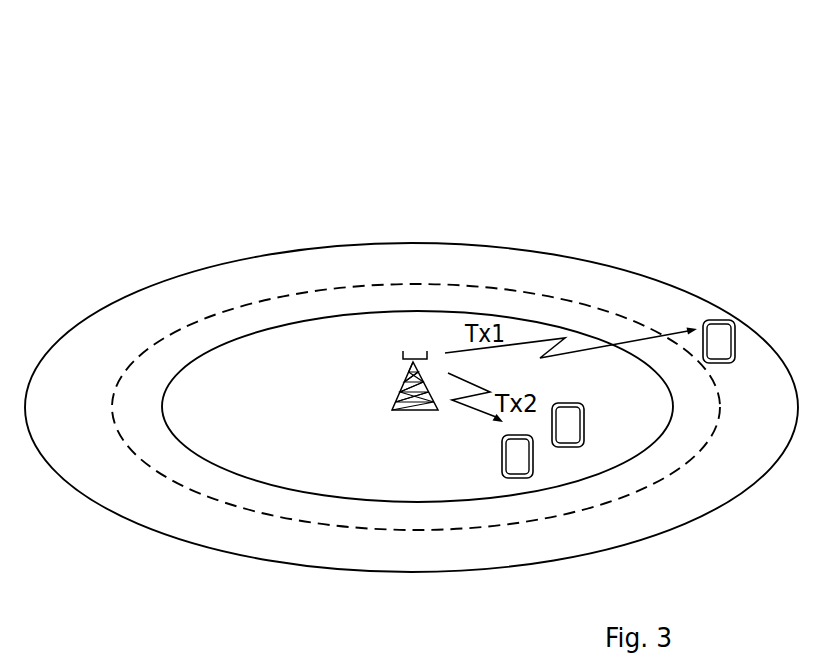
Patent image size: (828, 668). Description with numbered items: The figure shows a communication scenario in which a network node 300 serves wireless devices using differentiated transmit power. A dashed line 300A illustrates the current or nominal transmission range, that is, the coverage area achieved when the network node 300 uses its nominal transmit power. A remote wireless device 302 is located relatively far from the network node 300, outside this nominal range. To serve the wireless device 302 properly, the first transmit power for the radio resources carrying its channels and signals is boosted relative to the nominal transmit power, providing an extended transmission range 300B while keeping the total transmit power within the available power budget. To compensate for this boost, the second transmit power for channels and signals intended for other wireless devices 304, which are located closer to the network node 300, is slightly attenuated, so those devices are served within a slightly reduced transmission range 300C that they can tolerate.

The network node 300 is at (398, 386).
The dashed line (nominal transmission range) 300A is at (475, 275).
The extended transmission range 300B is at (540, 243).
The reduced transmission range 300C is at (325, 305).
The remote wireless device 302 is at (717, 320).
The other wireless devices 304 is at (472, 459).